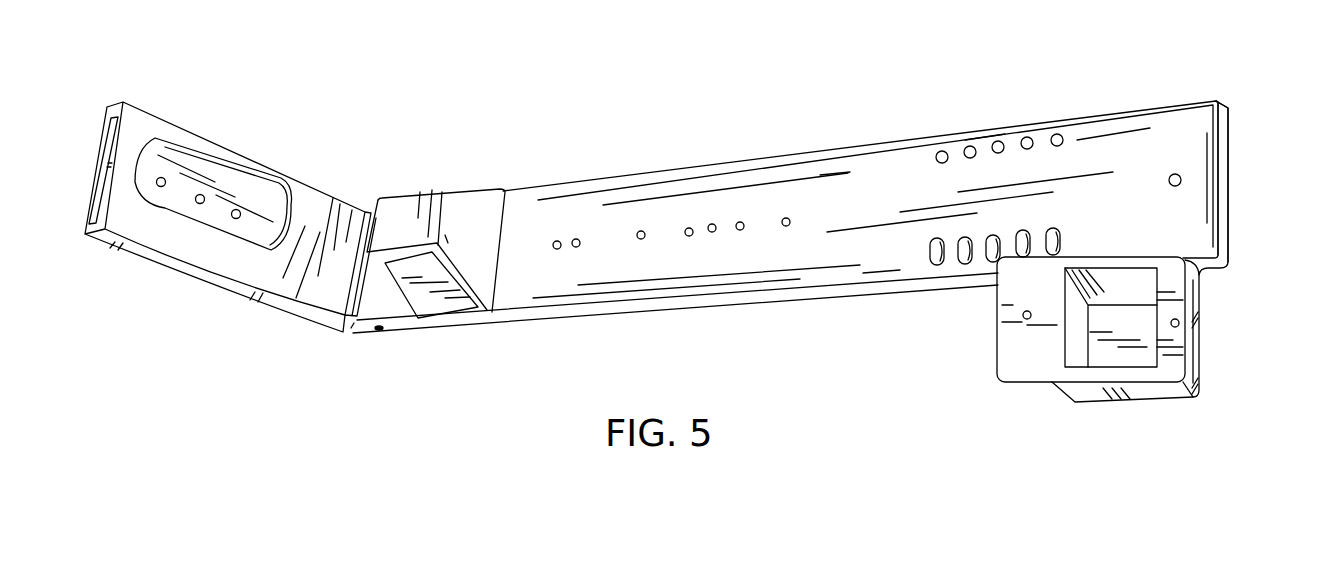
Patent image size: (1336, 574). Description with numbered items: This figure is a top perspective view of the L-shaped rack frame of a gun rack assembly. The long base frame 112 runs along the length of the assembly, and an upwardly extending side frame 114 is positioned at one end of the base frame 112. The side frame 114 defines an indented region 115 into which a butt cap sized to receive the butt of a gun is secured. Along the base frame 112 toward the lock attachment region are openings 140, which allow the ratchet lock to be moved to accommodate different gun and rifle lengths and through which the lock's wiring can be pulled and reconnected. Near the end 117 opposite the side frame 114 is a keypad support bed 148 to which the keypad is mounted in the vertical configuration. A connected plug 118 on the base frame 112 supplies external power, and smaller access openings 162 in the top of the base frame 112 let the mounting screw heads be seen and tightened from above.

The base frame 112 is at (690, 307).
The side frame 114 is at (308, 192).
The indented region 115 is at (225, 172).
The end 117 is at (1160, 114).
The connected plug 118 is at (381, 337).
The openings 140 is at (1027, 230).
The keypad support bed 148 is at (1029, 370).
The access openings 162 is at (788, 218).